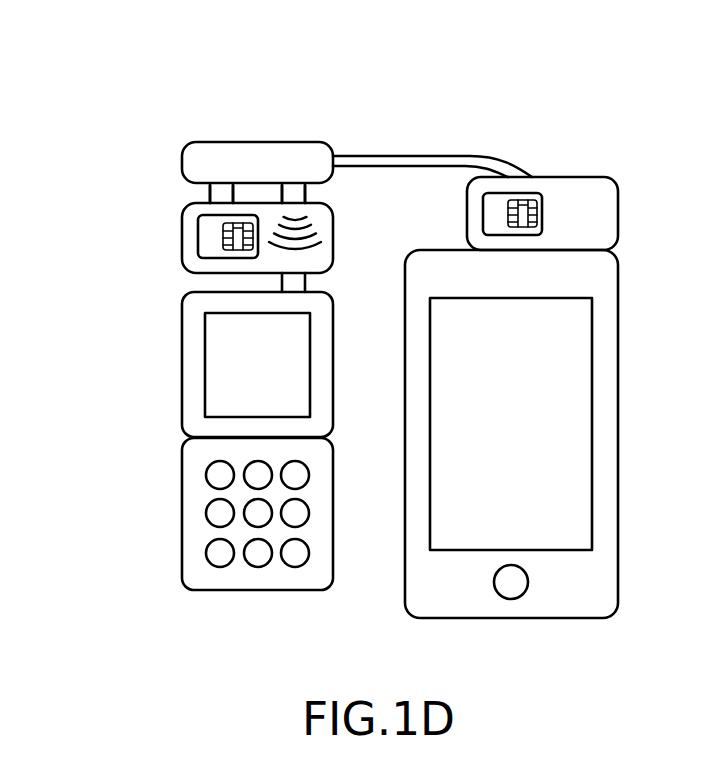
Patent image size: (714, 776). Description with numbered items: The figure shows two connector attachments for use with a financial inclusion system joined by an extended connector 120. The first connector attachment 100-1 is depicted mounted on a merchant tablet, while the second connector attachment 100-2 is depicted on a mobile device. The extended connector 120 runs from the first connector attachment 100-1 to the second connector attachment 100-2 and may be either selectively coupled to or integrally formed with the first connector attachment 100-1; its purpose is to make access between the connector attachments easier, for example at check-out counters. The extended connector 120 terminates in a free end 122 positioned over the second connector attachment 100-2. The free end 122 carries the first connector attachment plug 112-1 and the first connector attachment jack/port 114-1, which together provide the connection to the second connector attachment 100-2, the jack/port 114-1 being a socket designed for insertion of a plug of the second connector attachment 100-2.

The first connector attachment 100-1 is at (590, 176).
The second connector attachment 100-2 is at (183, 256).
The first connector attachment plug 112-1 is at (210, 190).
The first connector attachment jack/port 114-1 is at (302, 180).
The extended connector 120 is at (423, 120).
The free end 122 is at (220, 142).